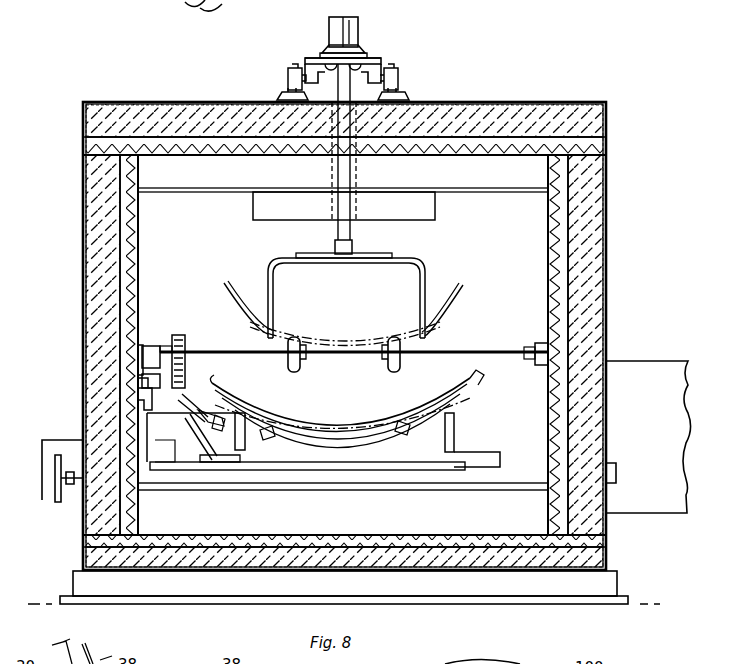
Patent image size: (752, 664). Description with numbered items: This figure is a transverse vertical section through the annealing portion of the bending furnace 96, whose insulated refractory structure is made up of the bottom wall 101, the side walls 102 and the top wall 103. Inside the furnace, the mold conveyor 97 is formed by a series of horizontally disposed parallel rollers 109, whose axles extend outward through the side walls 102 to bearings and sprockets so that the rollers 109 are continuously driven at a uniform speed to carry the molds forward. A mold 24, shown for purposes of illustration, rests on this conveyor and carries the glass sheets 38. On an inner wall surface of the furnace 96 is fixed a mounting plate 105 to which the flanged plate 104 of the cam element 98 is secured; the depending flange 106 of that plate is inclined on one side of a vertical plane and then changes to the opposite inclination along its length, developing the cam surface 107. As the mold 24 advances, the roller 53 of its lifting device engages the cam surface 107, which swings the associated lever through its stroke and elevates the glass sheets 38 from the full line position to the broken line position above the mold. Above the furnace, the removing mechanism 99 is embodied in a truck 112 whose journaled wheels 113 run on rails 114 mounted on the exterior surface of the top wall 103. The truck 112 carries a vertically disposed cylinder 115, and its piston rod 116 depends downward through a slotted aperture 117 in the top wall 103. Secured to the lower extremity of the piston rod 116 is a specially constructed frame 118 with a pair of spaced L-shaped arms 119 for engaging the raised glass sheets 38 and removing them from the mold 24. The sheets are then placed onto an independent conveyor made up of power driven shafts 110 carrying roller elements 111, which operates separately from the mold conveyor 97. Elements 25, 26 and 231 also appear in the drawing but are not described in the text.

The furnace 96 is at (80, 161).
The conveyor line 97 is at (413, 485).
The cam element 98 is at (162, 422).
The removing mechanism 99 is at (300, 52).
The bottom wall 101 is at (330, 548).
The side walls 102 is at (112, 283).
The top wall 103 is at (220, 122).
The flanged plate 104 is at (218, 405).
The mounting plate 105 is at (140, 397).
The depending flange 106 is at (192, 437).
The cam surface 107 is at (228, 400).
The rollers 109 is at (250, 472).
The power driven shafts 110 is at (486, 352).
The roller elements 111 is at (292, 366).
The truck 112 is at (381, 60).
The wheels 113 is at (288, 72).
The rails 114 is at (279, 92).
The cylinder 115 is at (358, 30).
The piston rod 116 is at (336, 236).
The slotted aperture 117 is at (356, 175).
The frame 118 is at (396, 250).
The L-shaped arms 119 is at (262, 290).
The mold 24 is at (460, 410).
The base member 25 is at (232, 460).
The block 26 is at (498, 452).
The glass sheets 38 is at (338, 333).
The roller 53 is at (190, 410).
The housing 231 is at (651, 385).